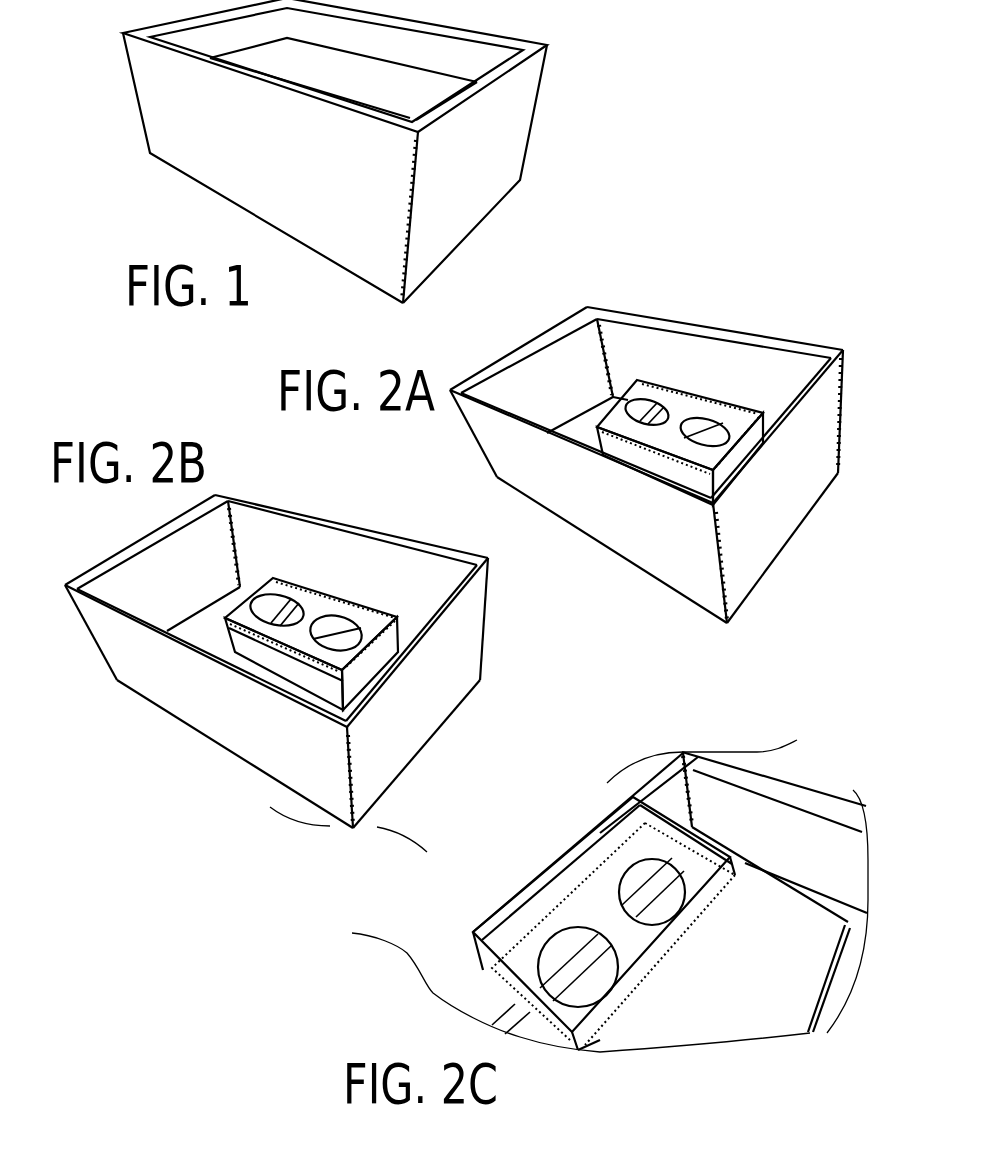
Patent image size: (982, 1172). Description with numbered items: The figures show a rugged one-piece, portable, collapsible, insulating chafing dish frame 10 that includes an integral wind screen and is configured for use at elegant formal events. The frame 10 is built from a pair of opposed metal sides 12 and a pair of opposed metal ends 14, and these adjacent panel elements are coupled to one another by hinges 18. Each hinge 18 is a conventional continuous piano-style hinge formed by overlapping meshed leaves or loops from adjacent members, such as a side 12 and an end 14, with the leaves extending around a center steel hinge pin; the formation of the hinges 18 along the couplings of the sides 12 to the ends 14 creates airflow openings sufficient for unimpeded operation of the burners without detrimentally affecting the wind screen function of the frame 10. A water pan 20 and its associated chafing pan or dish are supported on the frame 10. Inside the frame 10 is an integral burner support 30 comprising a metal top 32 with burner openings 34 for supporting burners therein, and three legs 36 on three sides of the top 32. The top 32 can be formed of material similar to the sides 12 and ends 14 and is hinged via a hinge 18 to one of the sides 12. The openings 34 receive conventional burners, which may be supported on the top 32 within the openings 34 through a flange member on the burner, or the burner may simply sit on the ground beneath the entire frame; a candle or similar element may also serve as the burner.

In FIG. 1, the chafing dish frame 10 is at (562, 105).
In FIG. 1, the sides 12 is at (243, 165).
In FIG. 2A, the sides 12 is at (677, 327).
In FIG. 2B, the sides 12 is at (112, 657).
In FIG. 2C, the sides 12 is at (588, 818).
In FIG. 1, the ends 14 is at (460, 161).
In FIG. 2A, the ends 14 is at (527, 350).
In FIG. 2B, the ends 14 is at (440, 653).
In FIG. 2C, the ends 14 is at (800, 790).
In FIG. 1, the hinges 18 is at (413, 263).
In FIG. 2A, the hinges 18 is at (840, 392).
In FIG. 2B, the hinges 18 is at (370, 625).
In FIG. 1, the water pan 20 is at (457, 47).
In FIG. 2A, the burner support 30 is at (677, 407).
In FIG. 2B, the burner support 30 is at (253, 648).
In FIG. 2C, the burner support 30 is at (480, 1004).
In FIG. 2B, the top 32 is at (290, 630).
In FIG. 2C, the top 32 is at (590, 907).
In FIG. 2B, the burner openings 34 is at (223, 618).
In FIG. 2B, the legs 36 is at (360, 677).
In FIG. 2C, the legs 36 is at (585, 842).